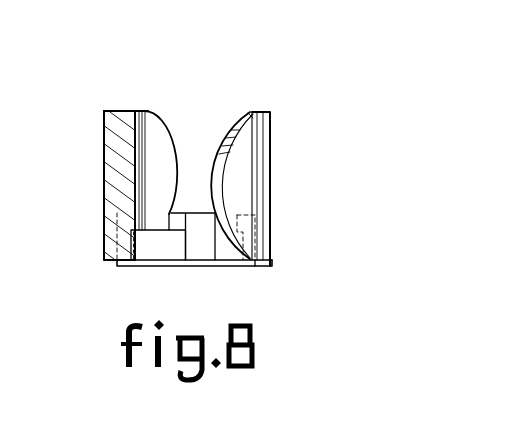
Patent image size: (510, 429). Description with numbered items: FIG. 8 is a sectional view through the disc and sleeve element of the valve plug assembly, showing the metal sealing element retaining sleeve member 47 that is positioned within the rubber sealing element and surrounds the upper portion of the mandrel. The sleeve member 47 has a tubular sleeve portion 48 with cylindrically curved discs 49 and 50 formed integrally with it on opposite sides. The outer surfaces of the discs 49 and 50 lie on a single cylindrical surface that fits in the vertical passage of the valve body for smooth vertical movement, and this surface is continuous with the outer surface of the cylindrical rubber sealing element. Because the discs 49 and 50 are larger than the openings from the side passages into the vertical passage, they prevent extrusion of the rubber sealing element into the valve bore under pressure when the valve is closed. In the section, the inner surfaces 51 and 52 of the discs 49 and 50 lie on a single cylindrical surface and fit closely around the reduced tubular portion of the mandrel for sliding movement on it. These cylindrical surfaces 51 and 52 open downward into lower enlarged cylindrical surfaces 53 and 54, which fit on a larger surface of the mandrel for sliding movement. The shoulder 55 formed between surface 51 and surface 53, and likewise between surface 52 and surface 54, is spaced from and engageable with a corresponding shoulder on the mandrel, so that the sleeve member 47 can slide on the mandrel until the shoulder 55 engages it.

The sealing element retaining sleeve member 47 is at (193, 195).
The tubular sleeve portion 48 is at (221, 264).
The cylindrically curved disc 49 is at (103, 161).
The cylindrically curved disc 50 is at (258, 178).
The inner surface 51 is at (150, 138).
The inner surface 52 is at (247, 113).
The lower enlarged cylindrical surface 53 is at (132, 249).
The lower enlarged cylindrical surface 54 is at (262, 267).
The shoulder 55 is at (158, 237).